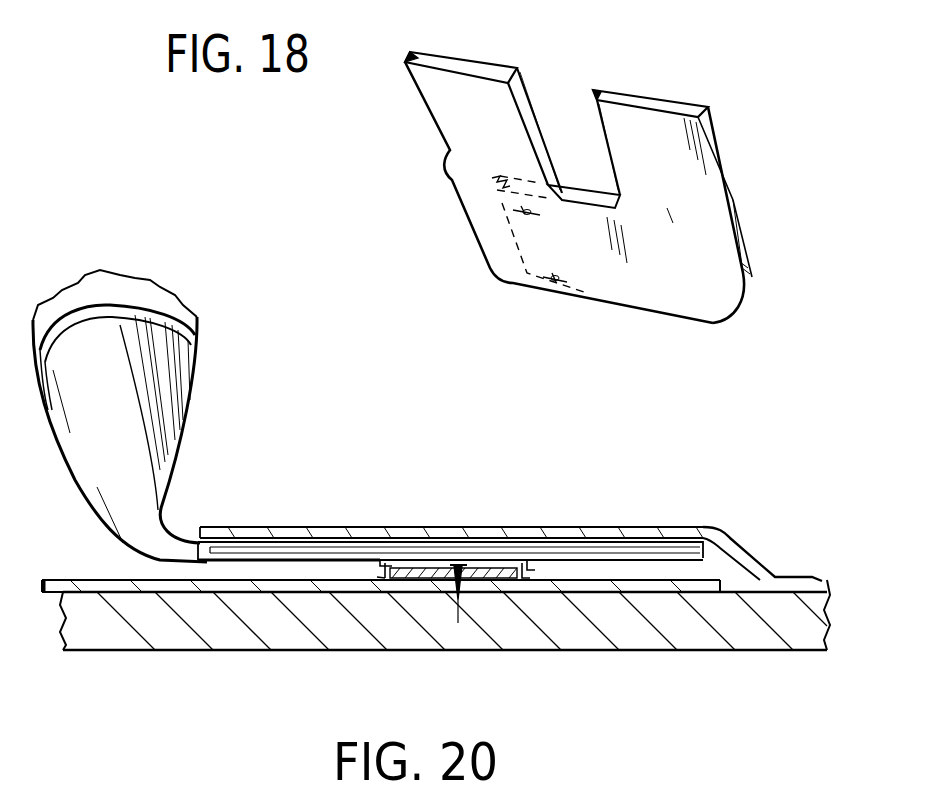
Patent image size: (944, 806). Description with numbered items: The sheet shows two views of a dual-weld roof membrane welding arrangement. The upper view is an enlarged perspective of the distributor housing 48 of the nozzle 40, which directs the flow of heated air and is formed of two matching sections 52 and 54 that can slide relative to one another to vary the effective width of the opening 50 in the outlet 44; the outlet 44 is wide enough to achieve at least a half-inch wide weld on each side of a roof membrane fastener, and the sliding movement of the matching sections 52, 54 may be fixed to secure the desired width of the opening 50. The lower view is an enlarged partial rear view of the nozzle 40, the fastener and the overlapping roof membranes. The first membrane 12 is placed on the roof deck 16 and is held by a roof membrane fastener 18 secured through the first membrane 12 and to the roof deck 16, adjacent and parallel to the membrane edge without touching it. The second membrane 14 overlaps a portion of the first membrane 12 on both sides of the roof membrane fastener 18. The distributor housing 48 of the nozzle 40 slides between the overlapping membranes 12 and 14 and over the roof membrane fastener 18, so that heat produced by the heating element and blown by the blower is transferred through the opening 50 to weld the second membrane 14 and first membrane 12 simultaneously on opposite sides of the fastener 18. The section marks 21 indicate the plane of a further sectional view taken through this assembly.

In FIG. 20, the first membrane 12 is at (93, 597).
In FIG. 20, the second membrane 14 is at (737, 540).
In FIG. 20, the roof deck 16 is at (777, 620).
In FIG. 20, the roof membrane fastener 18 is at (483, 573).
In FIG. 20, the section line 21 is at (750, 472).
In FIG. 20, the nozzle 40 is at (188, 403).
In FIG. 18, the outlet 44 is at (462, 52).
In FIG. 18, the distributor housing 48 is at (713, 278).
In FIG. 18, the opening 50 is at (620, 83).
In FIG. 18, the matching section 52 is at (467, 190).
In FIG. 18, the matching section 54 is at (700, 303).